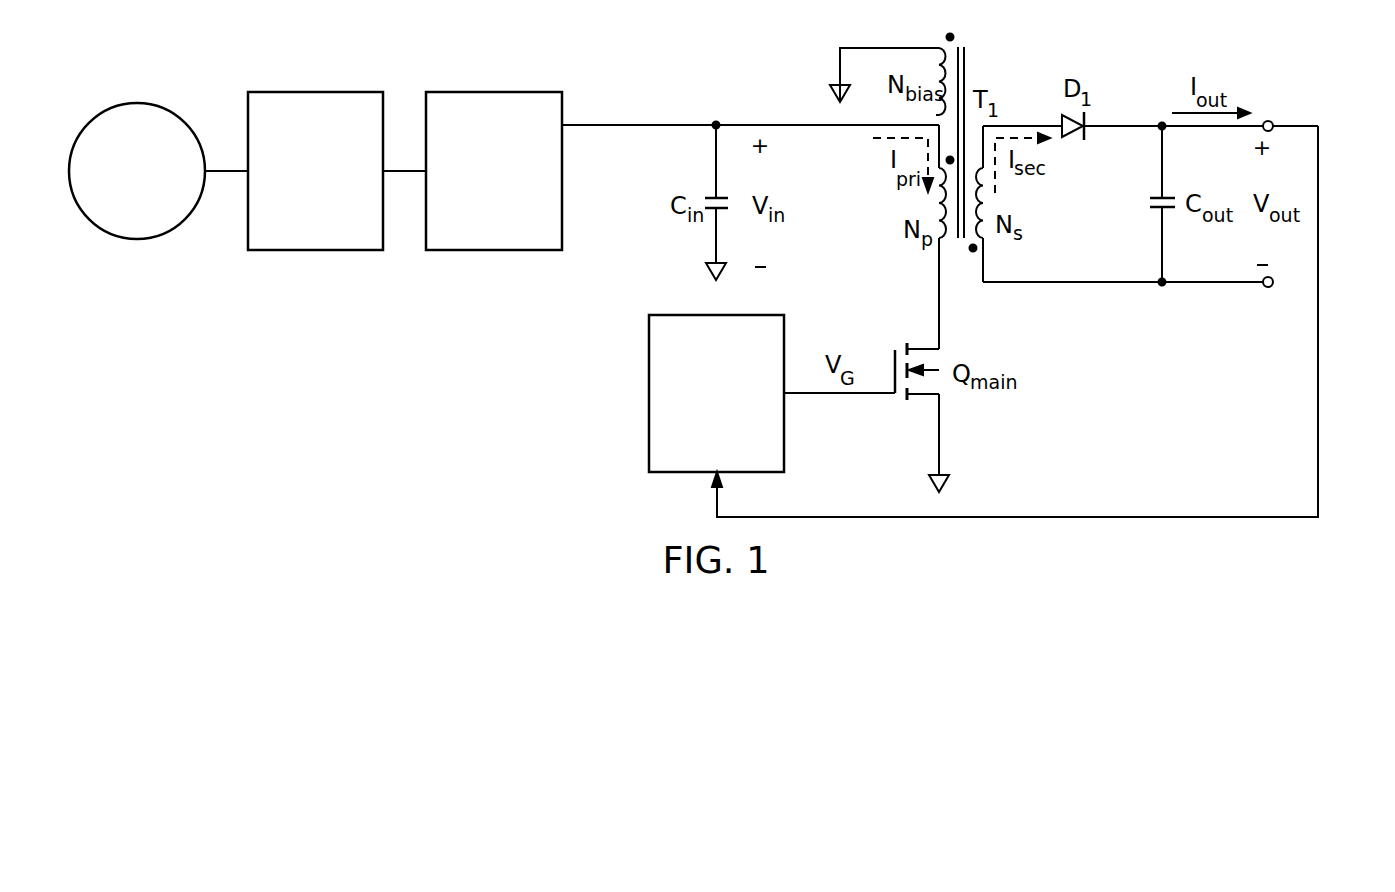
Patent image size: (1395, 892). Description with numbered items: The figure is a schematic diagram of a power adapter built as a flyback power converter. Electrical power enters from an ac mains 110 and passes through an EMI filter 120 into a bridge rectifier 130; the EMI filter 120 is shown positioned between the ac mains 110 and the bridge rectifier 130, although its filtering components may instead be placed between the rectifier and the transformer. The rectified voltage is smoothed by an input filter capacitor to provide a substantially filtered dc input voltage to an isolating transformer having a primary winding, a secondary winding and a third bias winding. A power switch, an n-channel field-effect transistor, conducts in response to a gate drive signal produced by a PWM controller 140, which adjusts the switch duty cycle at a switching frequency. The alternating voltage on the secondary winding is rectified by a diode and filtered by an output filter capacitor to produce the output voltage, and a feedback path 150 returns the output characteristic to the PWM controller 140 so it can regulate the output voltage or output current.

The ac mains 110 is at (158, 215).
The EMI filter 120 is at (293, 215).
The bridge rectifier 130 is at (473, 207).
The PWM controller 140 is at (695, 427).
The feedback path 150 is at (1318, 403).